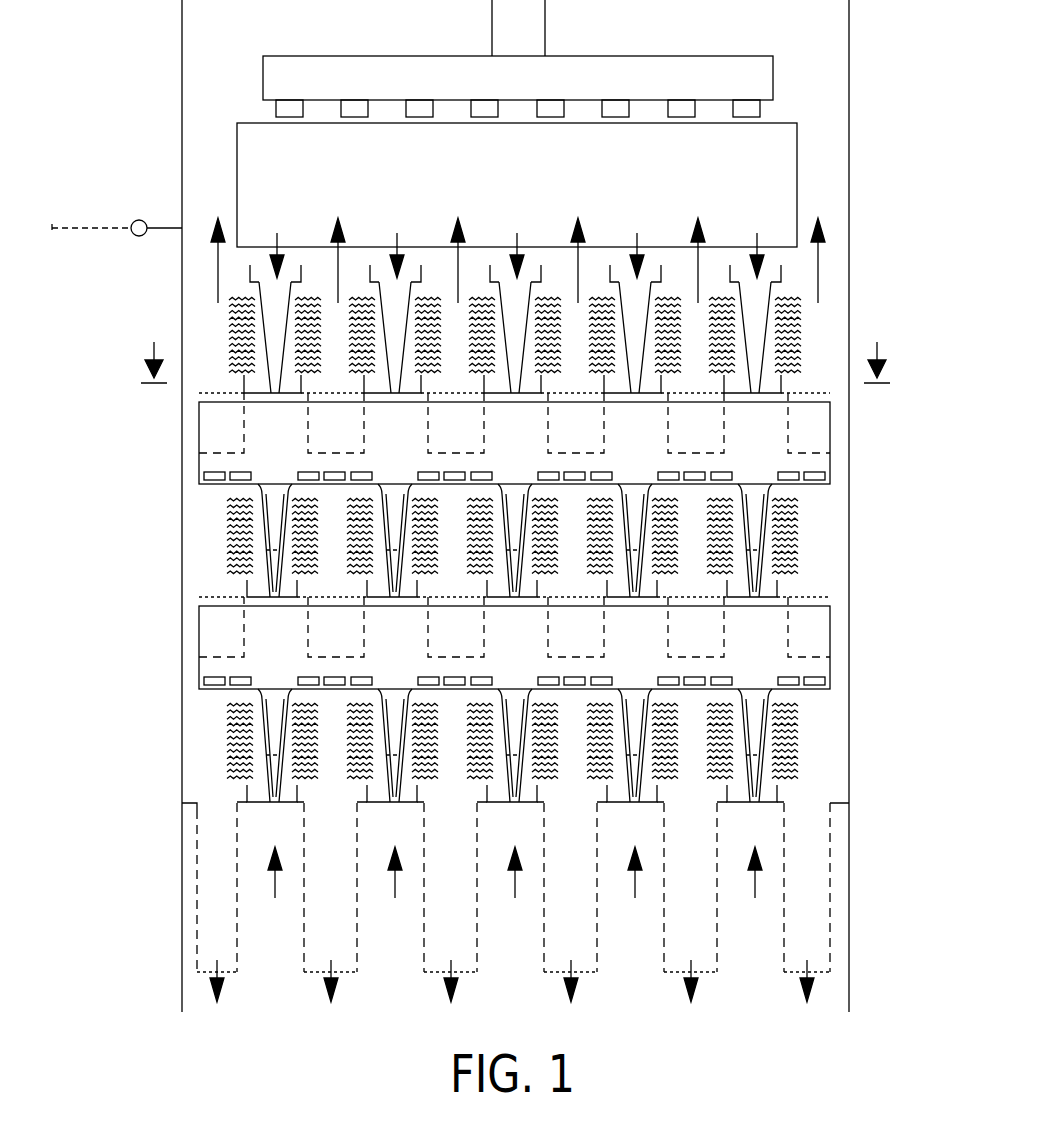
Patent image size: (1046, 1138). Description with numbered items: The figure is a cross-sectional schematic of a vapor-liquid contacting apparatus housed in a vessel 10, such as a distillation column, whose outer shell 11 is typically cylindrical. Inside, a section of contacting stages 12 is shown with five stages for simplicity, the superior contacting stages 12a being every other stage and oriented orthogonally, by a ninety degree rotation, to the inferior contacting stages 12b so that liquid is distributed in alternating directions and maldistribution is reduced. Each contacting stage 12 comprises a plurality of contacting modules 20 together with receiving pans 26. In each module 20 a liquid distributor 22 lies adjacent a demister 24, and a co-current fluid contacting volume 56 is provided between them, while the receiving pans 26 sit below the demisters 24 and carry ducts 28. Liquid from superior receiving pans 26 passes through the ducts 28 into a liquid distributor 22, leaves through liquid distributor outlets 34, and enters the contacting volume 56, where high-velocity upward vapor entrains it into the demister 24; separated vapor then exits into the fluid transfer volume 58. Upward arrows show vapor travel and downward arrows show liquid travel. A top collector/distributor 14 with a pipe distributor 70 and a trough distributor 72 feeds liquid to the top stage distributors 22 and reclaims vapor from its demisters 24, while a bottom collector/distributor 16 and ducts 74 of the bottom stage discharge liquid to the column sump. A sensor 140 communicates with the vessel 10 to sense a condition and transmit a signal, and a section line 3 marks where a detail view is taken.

The vessel 10 is at (531, 506).
The outer shell 11 is at (182, 152).
The contacting stage 12 is at (112, 211).
The superior contacting stage 12a is at (521, 500).
The inferior contacting stage 12b is at (525, 540).
The top collector/distributor 14 is at (555, 153).
The bottom collector/distributor 16 is at (474, 902).
The contacting module 20 is at (494, 500).
The liquid distributor 22 is at (278, 337).
The demister 24 is at (557, 325).
The receiving pan 26 is at (823, 393).
The duct 28 is at (545, 427).
The section line 3 is at (515, 345).
The liquid distributor outlet 34 is at (281, 393).
The co-current fluid contacting volume 56 is at (260, 373).
The fluid transfer volume 58 is at (697, 327).
The pipe distributor 70 is at (683, 76).
The trough distributor 72 is at (797, 167).
The duct 74 is at (196, 938).
The sensor 140 is at (166, 230).